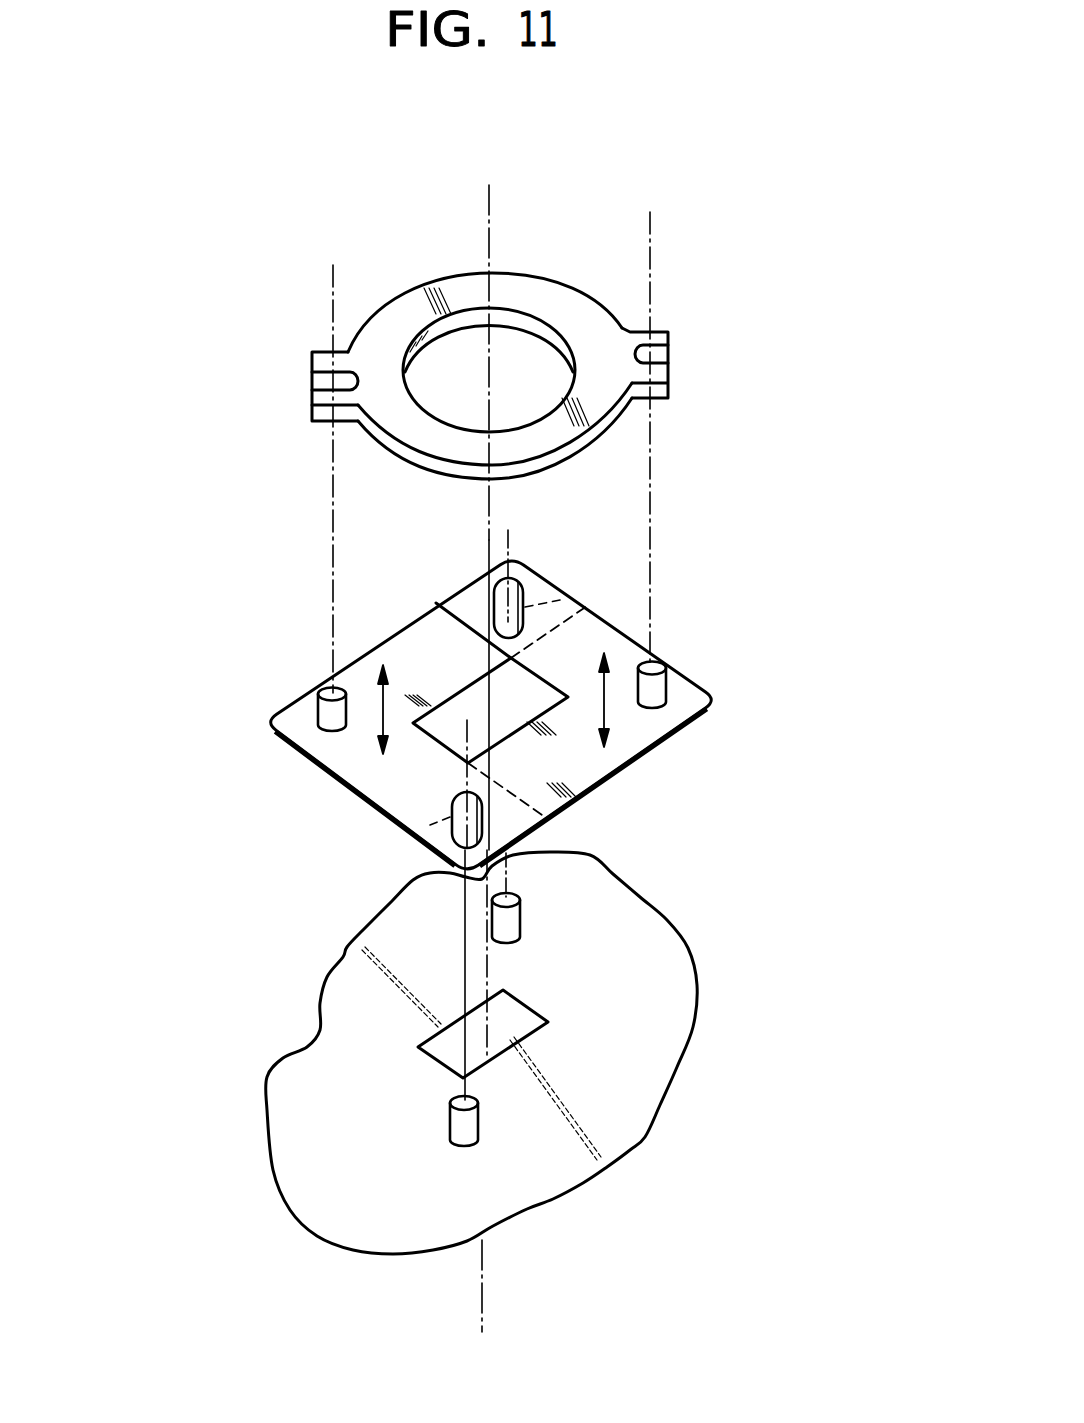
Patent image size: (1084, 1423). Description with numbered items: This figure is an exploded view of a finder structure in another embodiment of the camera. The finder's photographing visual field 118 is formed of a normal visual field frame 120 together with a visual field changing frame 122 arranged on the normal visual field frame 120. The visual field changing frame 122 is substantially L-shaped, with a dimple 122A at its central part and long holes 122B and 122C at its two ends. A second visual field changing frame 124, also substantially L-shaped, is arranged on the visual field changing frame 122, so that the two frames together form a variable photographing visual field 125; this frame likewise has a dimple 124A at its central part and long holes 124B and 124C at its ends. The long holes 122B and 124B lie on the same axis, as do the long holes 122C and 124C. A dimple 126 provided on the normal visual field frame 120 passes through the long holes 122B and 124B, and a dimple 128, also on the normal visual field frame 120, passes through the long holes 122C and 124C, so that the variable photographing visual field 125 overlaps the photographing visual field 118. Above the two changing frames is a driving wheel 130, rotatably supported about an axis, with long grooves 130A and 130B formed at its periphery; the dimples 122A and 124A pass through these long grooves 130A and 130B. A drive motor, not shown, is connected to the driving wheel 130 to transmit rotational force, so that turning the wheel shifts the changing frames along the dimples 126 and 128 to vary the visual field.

The photographing visual field 118 is at (513, 1033).
The normal visual field frame 120 is at (640, 1032).
The visual field changing frame 122 is at (343, 760).
The dimple 122A is at (317, 707).
The long hole 122B is at (525, 607).
The long hole 122C is at (450, 817).
The visual field changing frame 124 is at (633, 738).
The dimple 124A is at (652, 690).
The long hole 124B is at (523, 590).
The long hole 124C is at (450, 837).
The variable photographing visual field 125 is at (457, 707).
The dimple 126 is at (520, 918).
The dimple 128 is at (468, 1128).
The driving wheel 130 is at (548, 300).
The long groove 130A is at (327, 393).
The long groove 130B is at (648, 370).